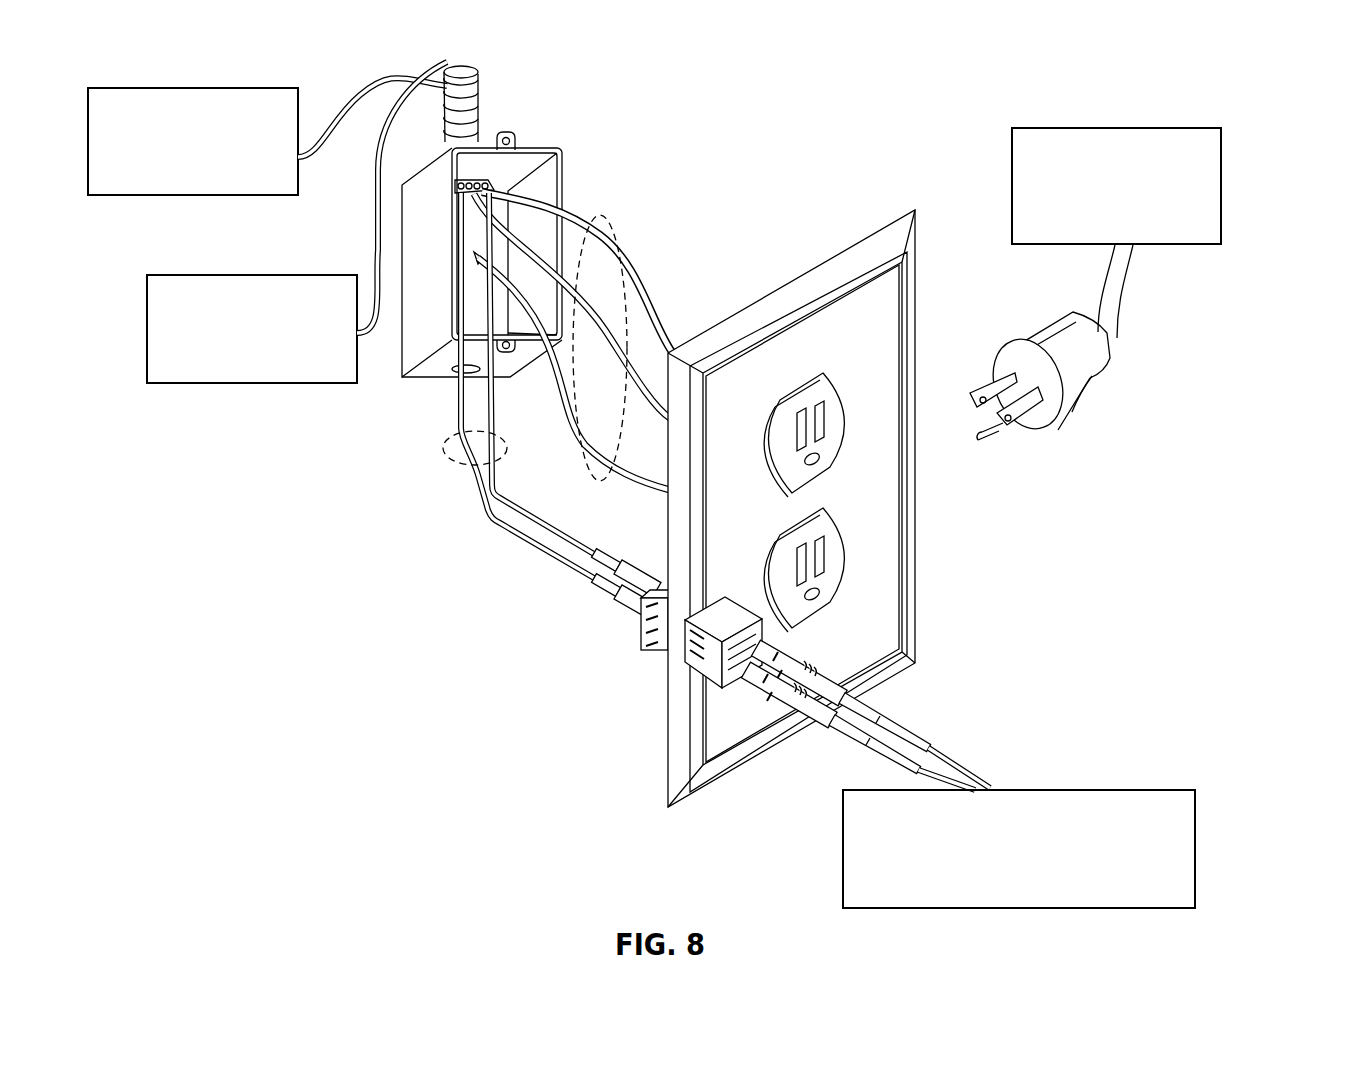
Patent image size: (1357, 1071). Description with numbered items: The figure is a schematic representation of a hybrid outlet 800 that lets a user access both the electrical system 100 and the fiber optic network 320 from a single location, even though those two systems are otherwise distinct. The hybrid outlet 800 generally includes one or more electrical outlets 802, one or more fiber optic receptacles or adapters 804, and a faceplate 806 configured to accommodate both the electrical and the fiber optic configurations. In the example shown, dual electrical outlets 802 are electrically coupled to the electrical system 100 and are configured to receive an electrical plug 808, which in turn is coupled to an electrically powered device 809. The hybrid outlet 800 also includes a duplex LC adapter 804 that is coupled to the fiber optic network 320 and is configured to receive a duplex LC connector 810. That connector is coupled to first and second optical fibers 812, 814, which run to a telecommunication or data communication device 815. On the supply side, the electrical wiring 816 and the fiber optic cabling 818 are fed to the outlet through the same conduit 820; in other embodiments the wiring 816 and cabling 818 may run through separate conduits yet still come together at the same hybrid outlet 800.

The electrical system 100 is at (162, 87).
The fiber optic network 320 is at (220, 275).
The hybrid outlet 800 is at (1248, 90).
The electrical outlets 802 is at (837, 430).
The duplex LC adapter 804 is at (683, 640).
The faceplate 806 is at (875, 592).
The electrical plug 808 is at (1077, 390).
The electrically powered device 809 is at (1083, 127).
The duplex LC connector 810 is at (741, 692).
The first optical fiber 812 is at (837, 512).
The second optical fiber 814 is at (838, 685).
The telecommunication or data communication device 815 is at (1128, 790).
The electrical wiring 816 is at (605, 213).
The fiber optic cabling 818 is at (443, 450).
The conduit 820 is at (462, 105).